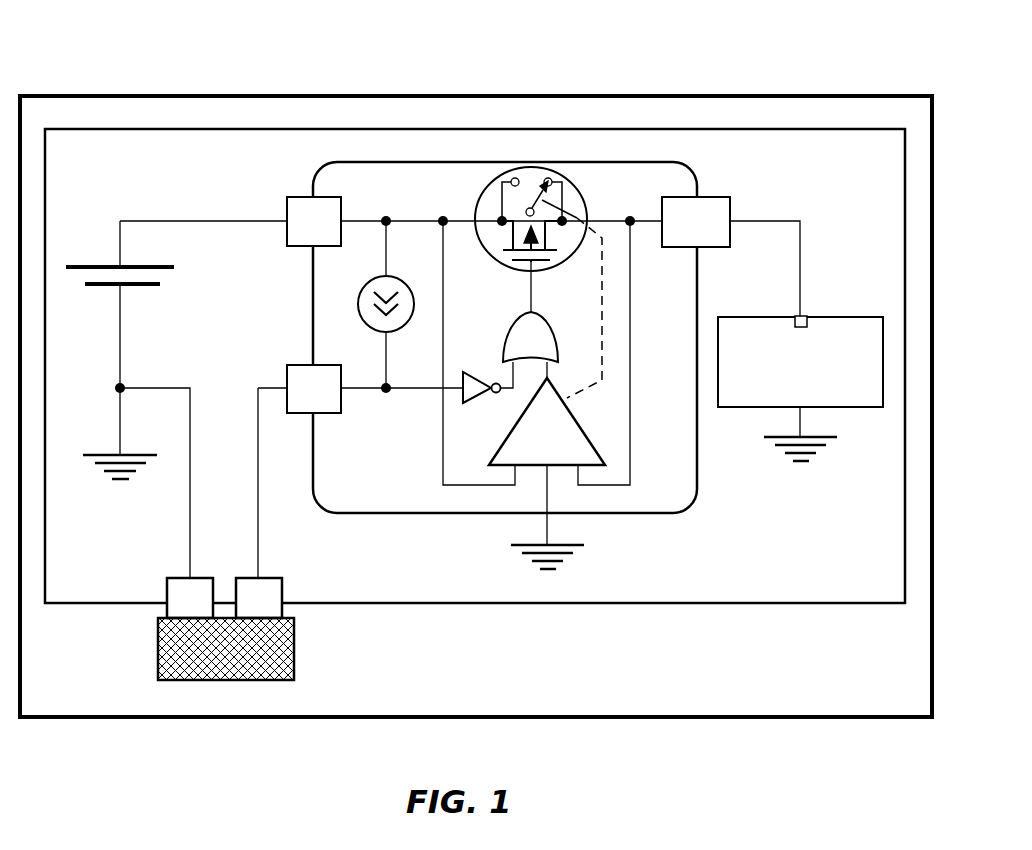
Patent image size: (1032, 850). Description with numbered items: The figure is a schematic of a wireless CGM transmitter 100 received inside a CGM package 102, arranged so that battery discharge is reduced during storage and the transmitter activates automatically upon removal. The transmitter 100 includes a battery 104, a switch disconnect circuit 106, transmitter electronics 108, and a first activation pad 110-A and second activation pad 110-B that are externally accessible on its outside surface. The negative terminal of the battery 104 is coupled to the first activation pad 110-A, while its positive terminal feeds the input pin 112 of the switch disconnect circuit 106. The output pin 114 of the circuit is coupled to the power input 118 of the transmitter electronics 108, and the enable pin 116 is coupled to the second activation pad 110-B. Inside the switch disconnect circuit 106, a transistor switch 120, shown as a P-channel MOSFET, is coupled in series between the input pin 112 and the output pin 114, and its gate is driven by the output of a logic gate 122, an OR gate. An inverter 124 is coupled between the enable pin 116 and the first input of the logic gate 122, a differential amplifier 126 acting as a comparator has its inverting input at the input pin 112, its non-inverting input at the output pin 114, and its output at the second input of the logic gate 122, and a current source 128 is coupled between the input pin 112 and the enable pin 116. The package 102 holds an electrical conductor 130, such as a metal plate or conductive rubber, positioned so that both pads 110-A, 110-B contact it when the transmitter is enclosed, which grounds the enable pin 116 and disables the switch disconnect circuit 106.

The wireless CGM transmitter 100 is at (118, 128).
The CGM package 102 is at (233, 96).
The battery 104 is at (170, 270).
The switch disconnect circuit 106 is at (650, 514).
The transmitter electronics 108 is at (848, 317).
The first activation pad 110-A is at (175, 578).
The second activation pad 110-B is at (280, 578).
The input pin 112 is at (290, 200).
The output pin 114 is at (720, 200).
The enable pin 116 is at (290, 368).
The power input 118 is at (795, 323).
The transistor switch 120 is at (489, 198).
The logic gate 122 is at (512, 324).
The inverter 124 is at (482, 378).
The differential amplifier 126 is at (515, 418).
The current source 128 is at (358, 303).
The electrical conductor 130 is at (296, 644).